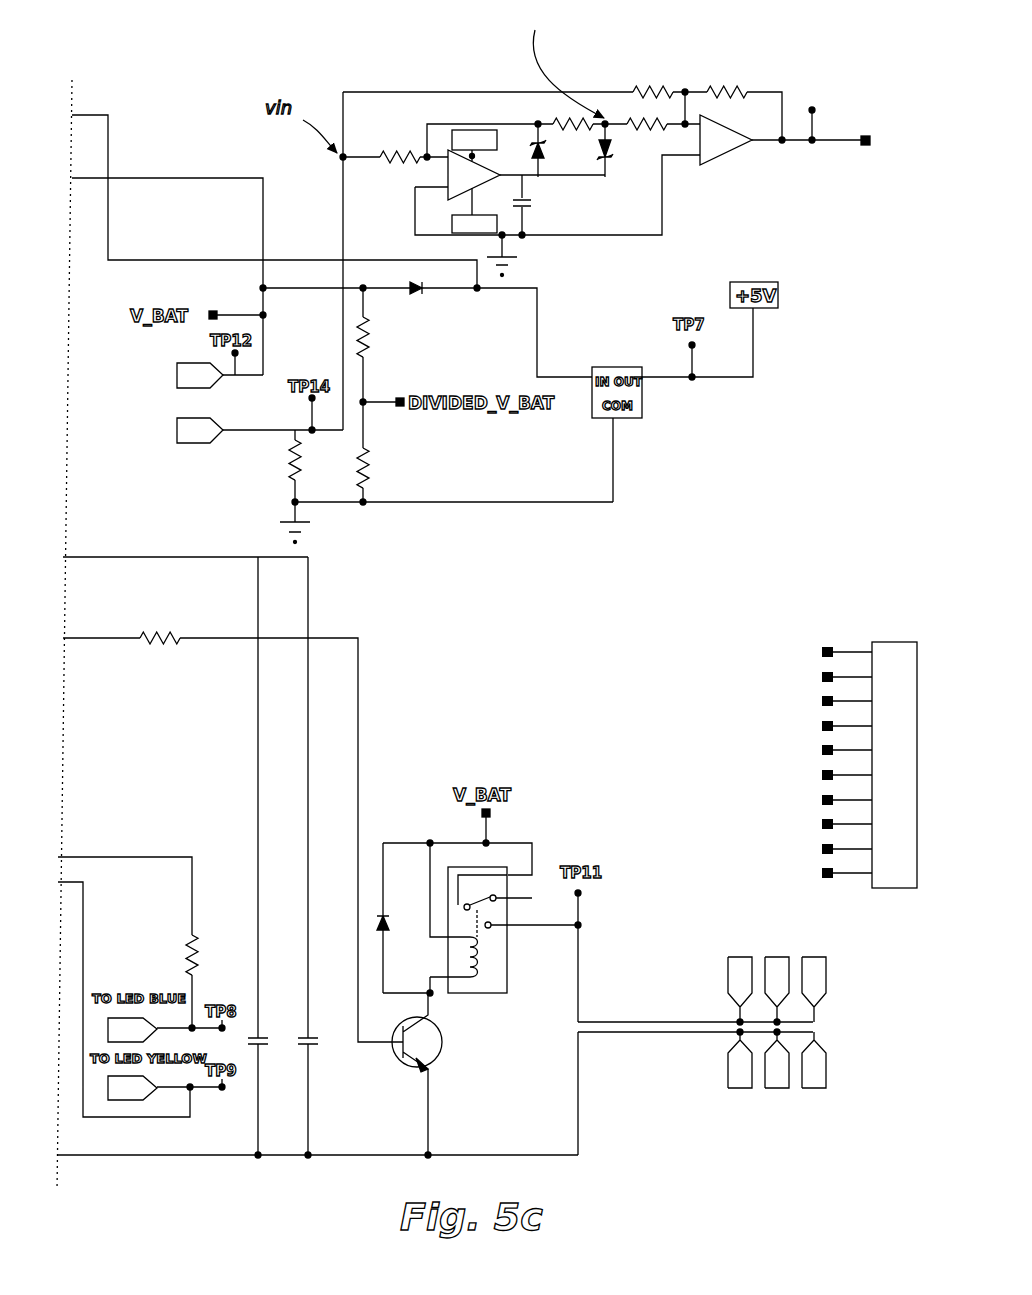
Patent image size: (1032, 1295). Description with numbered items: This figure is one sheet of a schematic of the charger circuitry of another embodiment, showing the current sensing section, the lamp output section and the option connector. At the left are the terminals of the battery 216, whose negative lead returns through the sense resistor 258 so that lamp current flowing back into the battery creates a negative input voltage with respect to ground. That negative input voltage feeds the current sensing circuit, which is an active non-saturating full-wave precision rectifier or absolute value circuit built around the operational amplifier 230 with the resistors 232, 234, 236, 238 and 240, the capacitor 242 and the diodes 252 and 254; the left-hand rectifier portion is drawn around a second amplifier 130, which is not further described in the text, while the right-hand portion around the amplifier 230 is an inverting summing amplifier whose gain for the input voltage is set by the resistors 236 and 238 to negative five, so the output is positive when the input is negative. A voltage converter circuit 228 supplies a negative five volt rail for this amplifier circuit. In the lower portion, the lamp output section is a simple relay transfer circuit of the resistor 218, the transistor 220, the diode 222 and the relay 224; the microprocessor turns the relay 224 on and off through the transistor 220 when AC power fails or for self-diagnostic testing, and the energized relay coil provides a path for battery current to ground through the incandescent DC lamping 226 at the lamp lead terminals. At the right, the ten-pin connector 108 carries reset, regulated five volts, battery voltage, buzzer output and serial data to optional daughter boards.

The ten-pin connector 108 is at (851, 632).
The operational amplifier 130 is at (444, 175).
The battery 216 is at (152, 358).
The resistor 218 is at (156, 652).
The transistor 220 is at (441, 1062).
The diode 222 is at (373, 895).
The relay 224 is at (508, 972).
The incandescent lamping 226 is at (710, 896).
The voltage converter integrated circuit 228 is at (618, 151).
The amplifier 230 is at (720, 160).
The resistor 232 is at (563, 110).
The resistor 234 is at (386, 145).
The resistor 236 is at (746, 80).
The resistor 238 is at (640, 79).
The resistor 240 is at (652, 142).
The capacitor 242 is at (534, 214).
The diode 252 is at (612, 160).
The diode 254 is at (547, 150).
The sense resistor 258 is at (278, 470).